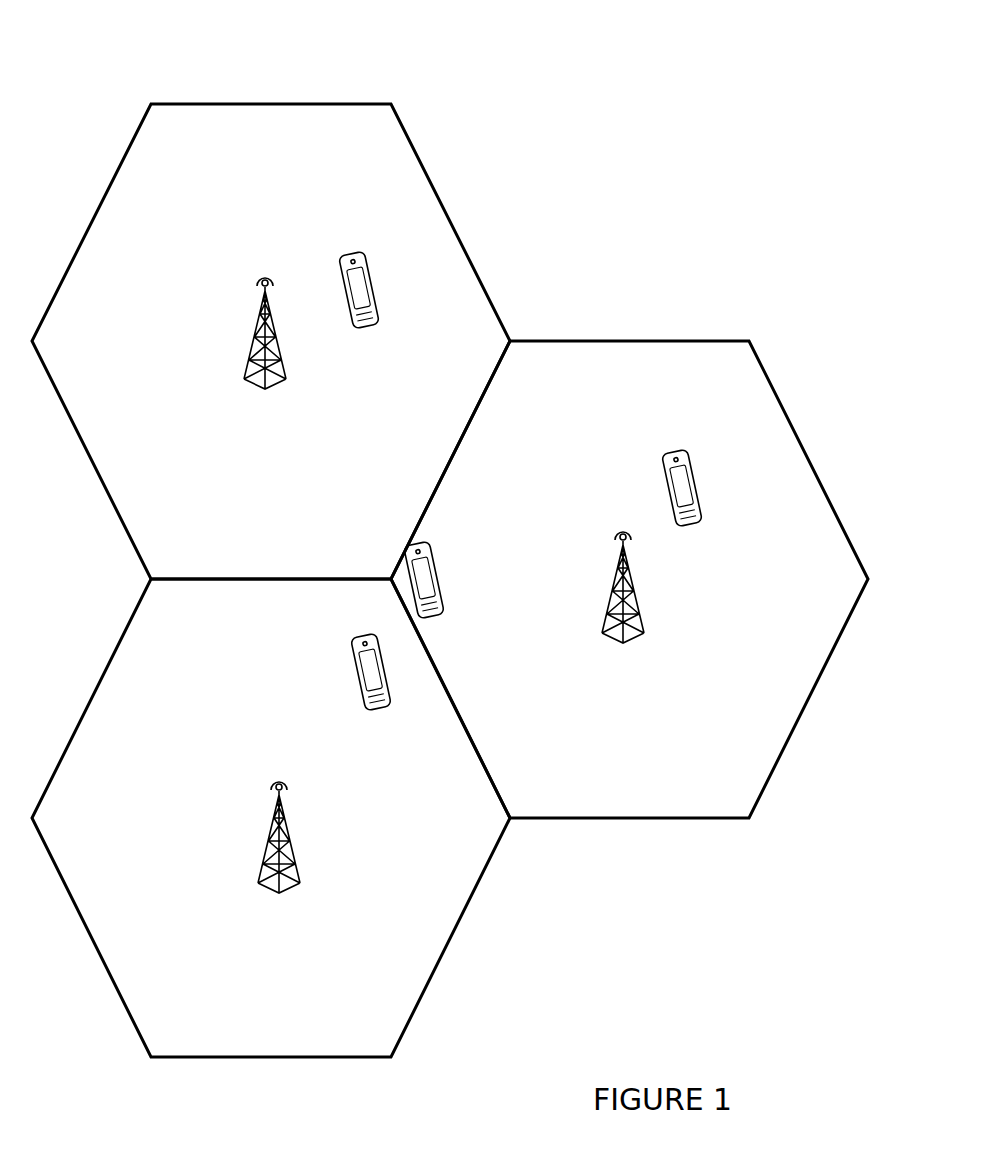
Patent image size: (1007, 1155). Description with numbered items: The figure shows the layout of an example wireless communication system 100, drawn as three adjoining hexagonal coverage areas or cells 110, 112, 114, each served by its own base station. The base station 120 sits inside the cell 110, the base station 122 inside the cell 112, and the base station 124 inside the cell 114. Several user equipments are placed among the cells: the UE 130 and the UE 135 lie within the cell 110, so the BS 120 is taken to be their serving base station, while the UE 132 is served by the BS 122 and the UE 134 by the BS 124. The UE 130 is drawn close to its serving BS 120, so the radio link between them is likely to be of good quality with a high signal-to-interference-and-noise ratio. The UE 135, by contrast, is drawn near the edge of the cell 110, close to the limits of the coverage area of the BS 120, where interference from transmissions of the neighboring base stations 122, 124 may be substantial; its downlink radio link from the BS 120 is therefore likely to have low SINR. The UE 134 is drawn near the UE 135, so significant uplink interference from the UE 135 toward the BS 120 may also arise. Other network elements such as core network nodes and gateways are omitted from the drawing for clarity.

The wireless communication system 100 is at (578, 108).
The cell 110 is at (629, 579).
The cell 112 is at (271, 341).
The cell 114 is at (271, 818).
The base station 120 is at (629, 604).
The base station 122 is at (237, 333).
The base station 124 is at (251, 837).
The user equipment 130 is at (711, 488).
The user equipment 132 is at (358, 275).
The user equipment 134 is at (350, 673).
The user equipment 135 is at (451, 580).